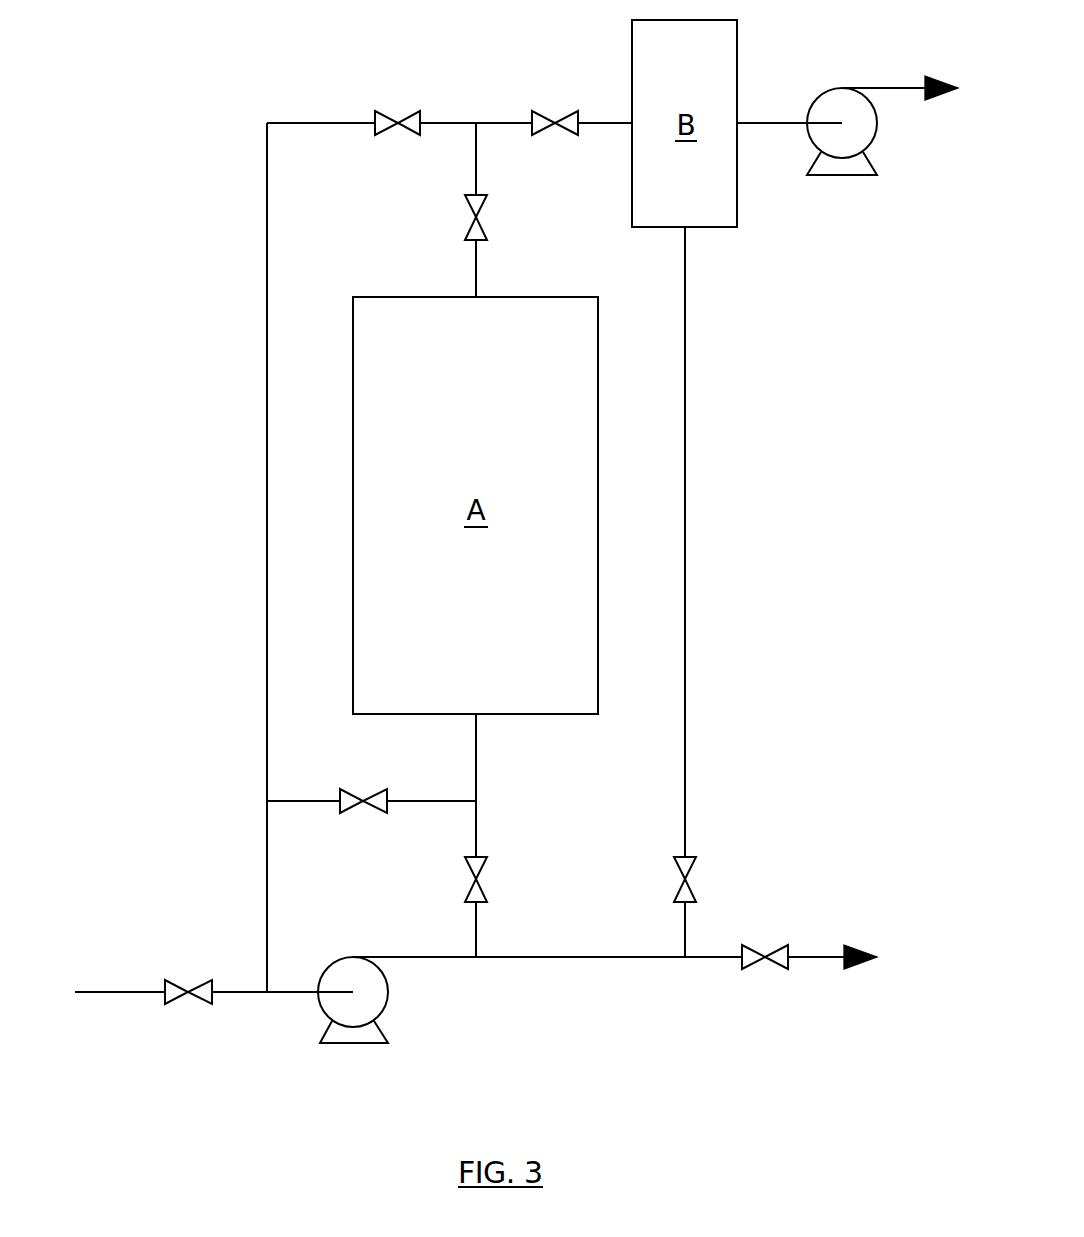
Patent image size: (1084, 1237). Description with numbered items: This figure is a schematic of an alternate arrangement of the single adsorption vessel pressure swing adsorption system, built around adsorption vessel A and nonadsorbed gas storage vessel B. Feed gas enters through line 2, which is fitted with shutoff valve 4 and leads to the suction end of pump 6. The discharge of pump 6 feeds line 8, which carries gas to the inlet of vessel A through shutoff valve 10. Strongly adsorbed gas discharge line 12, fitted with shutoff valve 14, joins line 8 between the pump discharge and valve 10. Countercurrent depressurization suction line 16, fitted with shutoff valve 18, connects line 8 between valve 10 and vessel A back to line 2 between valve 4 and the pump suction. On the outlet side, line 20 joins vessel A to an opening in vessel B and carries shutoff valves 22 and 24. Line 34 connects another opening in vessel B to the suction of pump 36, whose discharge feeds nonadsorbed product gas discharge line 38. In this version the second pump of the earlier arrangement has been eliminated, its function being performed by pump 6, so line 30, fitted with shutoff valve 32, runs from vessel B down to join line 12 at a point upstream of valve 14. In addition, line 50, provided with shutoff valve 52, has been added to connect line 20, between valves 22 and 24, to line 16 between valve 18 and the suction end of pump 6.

The line 2 is at (120, 953).
The shutoff valve 4 is at (196, 1025).
The pump 6 is at (300, 1026).
The line 8 is at (414, 935).
The shutoff valve 10 is at (488, 869).
The strongly adsorbed gas discharge line 12 is at (609, 988).
The shutoff valve 14 is at (809, 982).
The countercurrent depressurization suction line 16 is at (267, 859).
The shutoff valve 18 is at (348, 784).
The line 20 is at (476, 174).
The shutoff valve 22 is at (480, 228).
The shutoff valve 24 is at (566, 100).
The line 30 is at (685, 339).
The shutoff valve 32 is at (697, 869).
The line 34 is at (789, 91).
The pump 36 is at (842, 159).
The nonadsorbed product gas discharge line 38 is at (900, 68).
The line 50 is at (267, 384).
The shutoff valve 52 is at (378, 100).